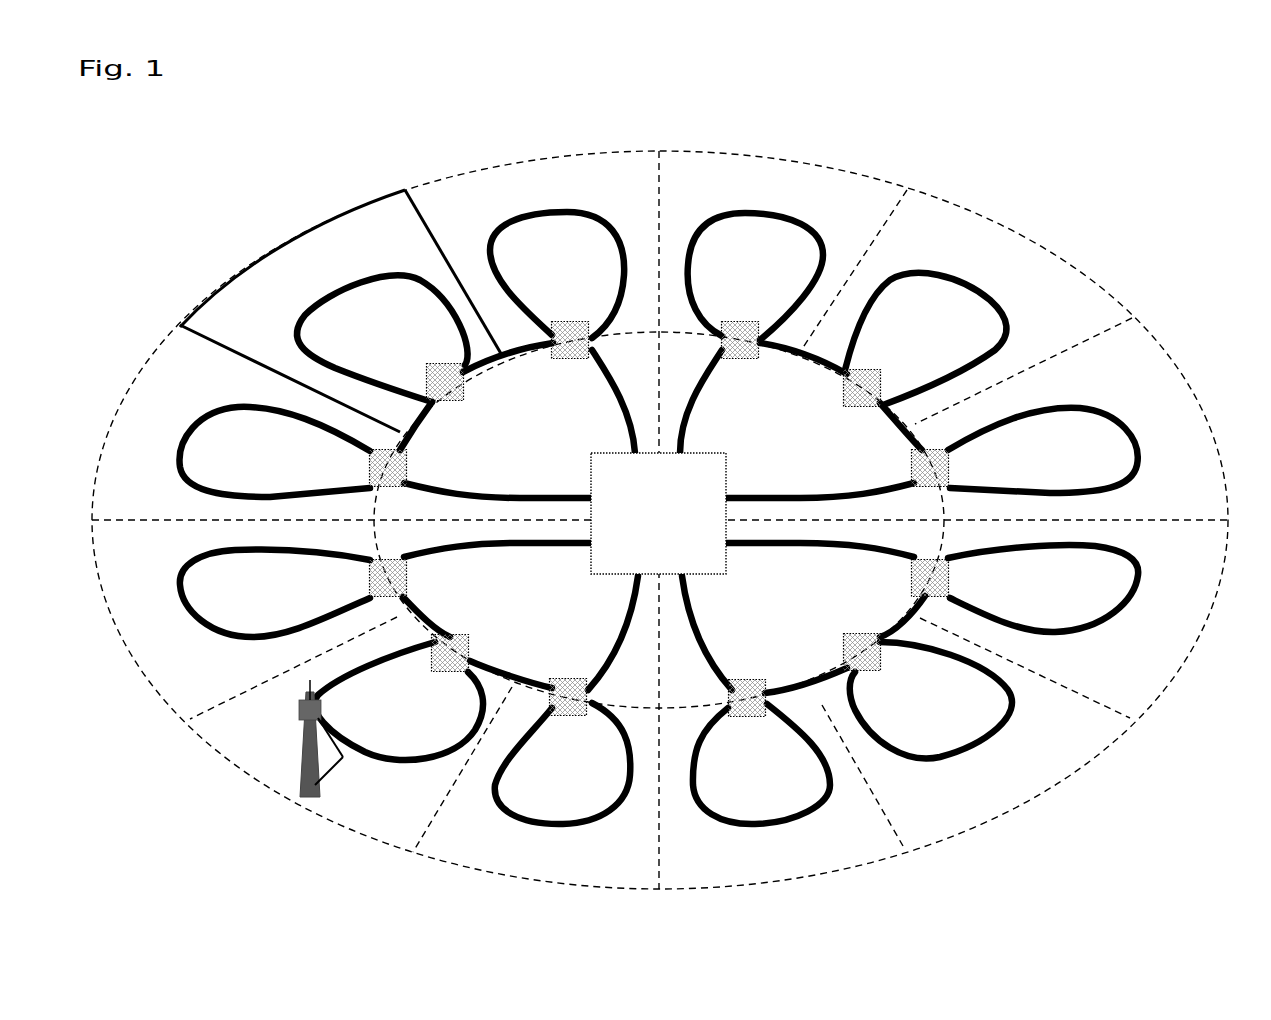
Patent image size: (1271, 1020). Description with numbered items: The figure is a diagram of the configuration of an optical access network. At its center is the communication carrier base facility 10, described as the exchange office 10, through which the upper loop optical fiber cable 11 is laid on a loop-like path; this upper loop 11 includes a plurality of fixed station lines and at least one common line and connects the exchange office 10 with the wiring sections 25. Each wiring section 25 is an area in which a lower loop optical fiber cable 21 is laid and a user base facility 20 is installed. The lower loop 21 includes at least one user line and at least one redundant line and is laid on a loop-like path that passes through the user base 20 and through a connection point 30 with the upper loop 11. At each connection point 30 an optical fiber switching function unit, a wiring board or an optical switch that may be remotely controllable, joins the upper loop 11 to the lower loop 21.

The communication carrier base facility 10 is at (698, 455).
The upper loop optical fiber cable 11 is at (915, 426).
The user base facility 20 is at (297, 762).
The lower loop optical fiber cable 21 is at (823, 245).
The wiring section 25 is at (277, 245).
The connection point 30 is at (883, 655).